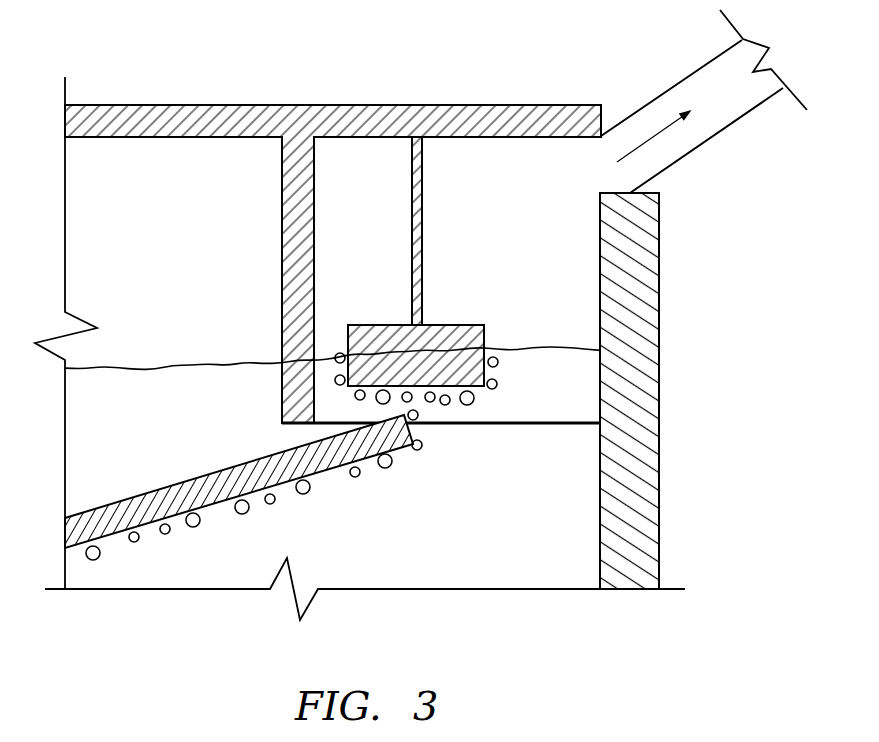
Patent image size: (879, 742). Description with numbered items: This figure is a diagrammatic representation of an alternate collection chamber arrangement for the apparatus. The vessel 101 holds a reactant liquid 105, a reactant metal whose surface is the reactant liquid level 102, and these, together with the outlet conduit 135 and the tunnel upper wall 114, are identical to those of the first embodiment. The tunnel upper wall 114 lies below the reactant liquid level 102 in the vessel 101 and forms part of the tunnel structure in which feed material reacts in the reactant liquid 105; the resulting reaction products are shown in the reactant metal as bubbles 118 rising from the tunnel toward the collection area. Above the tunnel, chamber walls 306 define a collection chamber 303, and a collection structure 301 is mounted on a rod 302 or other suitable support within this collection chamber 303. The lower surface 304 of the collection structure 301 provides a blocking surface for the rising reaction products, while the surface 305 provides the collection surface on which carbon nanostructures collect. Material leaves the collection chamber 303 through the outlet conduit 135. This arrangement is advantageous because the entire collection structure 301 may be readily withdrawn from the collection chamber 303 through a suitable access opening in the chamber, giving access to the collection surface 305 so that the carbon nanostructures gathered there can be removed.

The vessel 101 is at (660, 547).
The reactant liquid level 102 is at (162, 359).
The reactant liquid 105 is at (127, 412).
The tunnel upper wall 114 is at (148, 496).
The bubbles 118 is at (384, 469).
The outlet conduit 135 is at (672, 85).
The collection structure 301 is at (439, 278).
The rod 302 is at (423, 189).
The collection chamber 303 is at (351, 170).
The lower surface 304 is at (418, 388).
The collection surface 305 is at (376, 296).
The chamber walls 306 is at (553, 104).